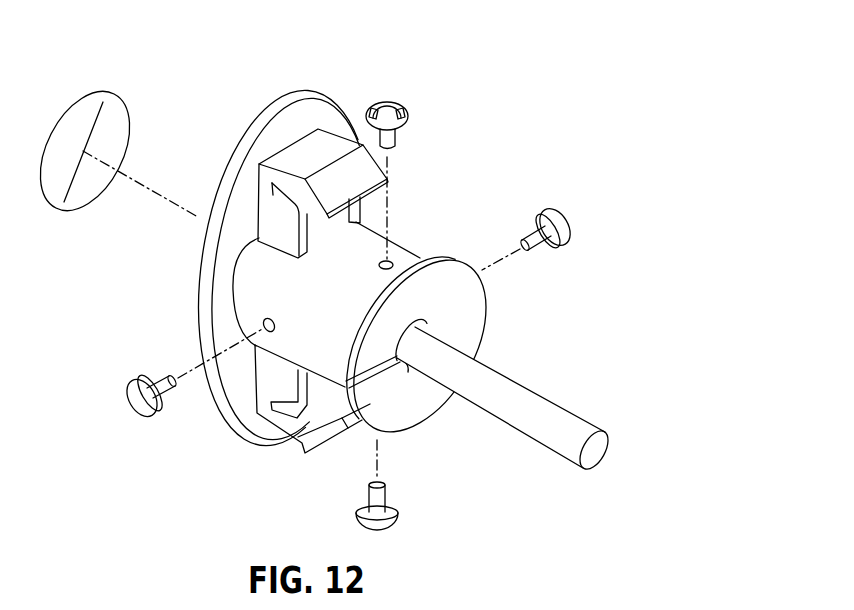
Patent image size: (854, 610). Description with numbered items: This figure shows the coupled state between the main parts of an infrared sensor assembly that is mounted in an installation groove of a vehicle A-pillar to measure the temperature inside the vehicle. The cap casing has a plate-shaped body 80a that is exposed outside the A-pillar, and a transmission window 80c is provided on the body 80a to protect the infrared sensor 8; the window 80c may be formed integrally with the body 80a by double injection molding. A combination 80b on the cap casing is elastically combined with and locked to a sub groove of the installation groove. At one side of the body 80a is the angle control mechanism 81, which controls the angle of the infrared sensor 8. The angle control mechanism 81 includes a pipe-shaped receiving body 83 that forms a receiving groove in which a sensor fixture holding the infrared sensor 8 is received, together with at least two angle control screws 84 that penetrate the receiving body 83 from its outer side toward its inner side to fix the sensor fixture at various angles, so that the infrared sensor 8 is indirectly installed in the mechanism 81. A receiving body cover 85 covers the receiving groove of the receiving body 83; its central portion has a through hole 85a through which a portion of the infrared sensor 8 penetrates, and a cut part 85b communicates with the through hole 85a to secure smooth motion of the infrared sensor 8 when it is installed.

The infrared sensor 8 is at (548, 430).
The body 80a is at (243, 202).
The combination 80b is at (305, 160).
The transmission window 80c is at (68, 130).
The angle control mechanism 81 is at (231, 423).
The receiving body 83 is at (308, 344).
The angle control screw 84 is at (133, 410).
The receiving body cover 85 is at (463, 317).
The through hole 85a is at (398, 363).
The cut part 85b is at (375, 380).